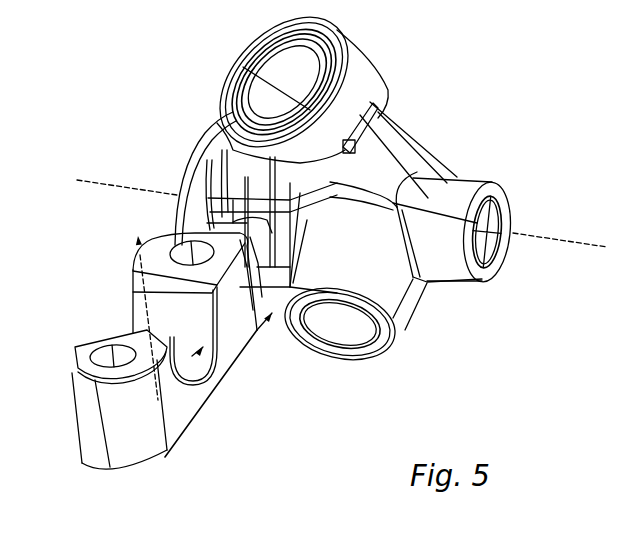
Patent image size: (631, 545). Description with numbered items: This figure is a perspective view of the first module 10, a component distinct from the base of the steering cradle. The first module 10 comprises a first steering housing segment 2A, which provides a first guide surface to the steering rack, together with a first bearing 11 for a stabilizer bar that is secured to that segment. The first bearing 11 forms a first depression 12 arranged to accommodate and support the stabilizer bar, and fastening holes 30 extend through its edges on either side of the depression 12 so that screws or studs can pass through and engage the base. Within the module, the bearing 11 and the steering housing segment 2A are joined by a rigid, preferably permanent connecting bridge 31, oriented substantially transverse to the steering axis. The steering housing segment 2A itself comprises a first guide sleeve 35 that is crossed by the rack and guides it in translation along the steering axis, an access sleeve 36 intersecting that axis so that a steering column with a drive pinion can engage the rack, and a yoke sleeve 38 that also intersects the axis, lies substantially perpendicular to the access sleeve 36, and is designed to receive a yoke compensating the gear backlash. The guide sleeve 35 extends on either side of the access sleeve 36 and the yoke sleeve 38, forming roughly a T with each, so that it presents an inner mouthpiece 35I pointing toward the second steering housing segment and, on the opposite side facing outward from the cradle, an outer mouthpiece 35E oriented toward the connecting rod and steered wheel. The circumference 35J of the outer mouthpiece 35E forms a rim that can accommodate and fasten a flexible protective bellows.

The first module 10 is at (533, 95).
The first bearing 11 is at (177, 407).
The first depression 12 is at (232, 343).
The first steering housing segment 2A is at (431, 168).
The fastening holes 30 is at (170, 253).
The connecting bridge 31 is at (200, 183).
The first guide sleeve 35 is at (465, 197).
The outer mouthpiece 35E is at (186, 130).
The inner mouthpiece 35I is at (492, 255).
The circumference of the outer mouthpiece 35J is at (217, 123).
The access sleeve 36 is at (366, 80).
The yoke sleeve 38 is at (400, 302).